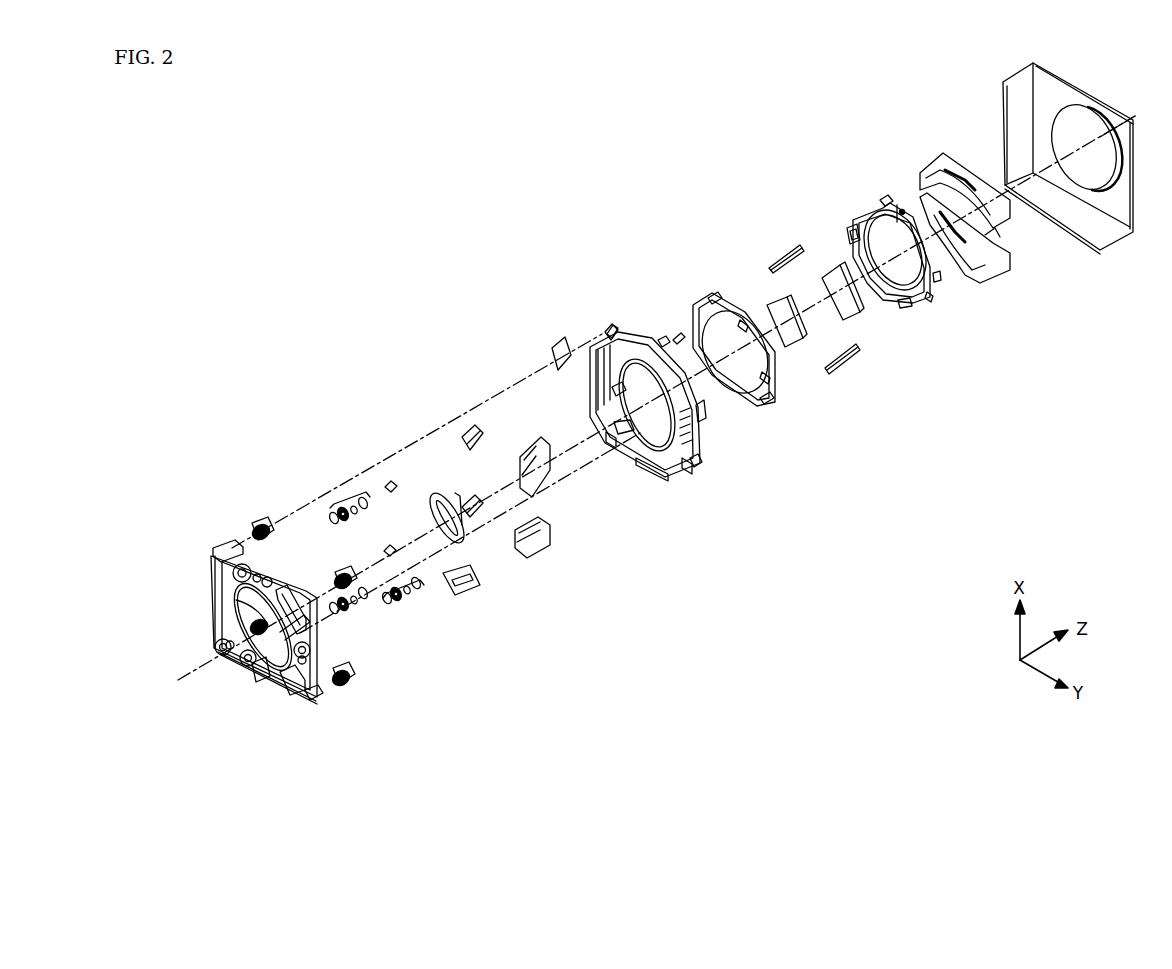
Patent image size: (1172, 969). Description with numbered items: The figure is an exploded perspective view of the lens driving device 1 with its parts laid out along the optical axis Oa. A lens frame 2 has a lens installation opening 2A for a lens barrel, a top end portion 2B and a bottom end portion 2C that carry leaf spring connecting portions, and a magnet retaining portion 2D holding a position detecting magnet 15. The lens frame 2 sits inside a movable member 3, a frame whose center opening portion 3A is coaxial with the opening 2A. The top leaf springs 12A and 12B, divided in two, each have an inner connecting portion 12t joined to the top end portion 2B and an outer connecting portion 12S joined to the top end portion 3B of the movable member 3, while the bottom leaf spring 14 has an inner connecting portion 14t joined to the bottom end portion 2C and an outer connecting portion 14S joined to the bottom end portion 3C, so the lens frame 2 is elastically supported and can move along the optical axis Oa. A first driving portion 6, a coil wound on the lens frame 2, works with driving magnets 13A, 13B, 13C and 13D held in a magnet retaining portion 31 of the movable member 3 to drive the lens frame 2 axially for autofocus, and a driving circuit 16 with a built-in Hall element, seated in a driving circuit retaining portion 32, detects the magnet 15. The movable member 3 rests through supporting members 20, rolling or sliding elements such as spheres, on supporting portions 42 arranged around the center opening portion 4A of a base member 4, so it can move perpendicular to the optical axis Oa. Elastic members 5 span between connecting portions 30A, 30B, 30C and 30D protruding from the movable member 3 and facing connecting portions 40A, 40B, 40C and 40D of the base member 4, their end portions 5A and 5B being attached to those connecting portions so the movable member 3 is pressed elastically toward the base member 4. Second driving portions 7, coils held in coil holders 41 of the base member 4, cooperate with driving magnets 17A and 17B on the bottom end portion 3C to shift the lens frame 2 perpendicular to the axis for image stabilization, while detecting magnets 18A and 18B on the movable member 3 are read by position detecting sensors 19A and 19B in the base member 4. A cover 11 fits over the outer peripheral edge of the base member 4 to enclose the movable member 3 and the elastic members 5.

The lens driving device 1 is at (662, 156).
The optical axis Oa is at (1137, 114).
The lens frame 2 is at (934, 280).
The lens installation opening 2A is at (880, 200).
The top end portion 2B is at (900, 207).
The bottom end portion 2C is at (905, 306).
The magnet retaining portion 2D is at (849, 231).
The movable member 3 is at (640, 335).
The center opening portion 3A is at (616, 425).
The top end portion 3B is at (700, 432).
The bottom end portion 3C is at (650, 472).
The base member 4 is at (262, 690).
The center opening portion 4A is at (212, 553).
The elastic member 5 is at (256, 527).
The end portion 5A is at (262, 522).
The end portion 5B is at (256, 531).
The first driving portion 6 is at (921, 304).
The second driving portion 7 is at (478, 583).
The cover 11 is at (1085, 236).
The top leaf spring 12A is at (981, 276).
The top leaf spring 12B is at (935, 166).
The outer connecting portion 12S is at (984, 172).
The inner connecting portion 12t is at (980, 237).
The driving magnet 13A is at (842, 366).
The driving magnet 13B is at (772, 300).
The driving magnet 13C is at (790, 243).
The driving magnet 13D is at (830, 265).
The bottom leaf spring 14 is at (693, 328).
The outer connecting portion 14S is at (712, 299).
The inner connecting portion 14t is at (773, 370).
The position detecting magnet 15 is at (677, 336).
The driving circuit (IC) 16 is at (560, 345).
The driving magnet 17A is at (548, 552).
The driving magnet 17B is at (537, 440).
The detecting magnet 18A is at (470, 497).
The detecting magnet 18B is at (470, 428).
The position detecting sensor 19A is at (390, 546).
The position detecting sensor 19B is at (390, 482).
The supporting member 20 is at (345, 500).
The connecting portion 30A is at (706, 420).
The connecting portion 30B is at (690, 466).
The connecting portion 30C is at (612, 442).
The connecting portion 30D is at (609, 334).
The magnet retaining portion 31 is at (662, 344).
The driving circuit retaining portion 32 is at (608, 334).
The connecting portion 40A is at (300, 592).
The connecting portion 40B is at (310, 703).
The connecting portion 40C is at (222, 648).
The connecting portion 40D is at (213, 550).
The coil holder 41 is at (285, 700).
The supporting portion 42 is at (237, 655).